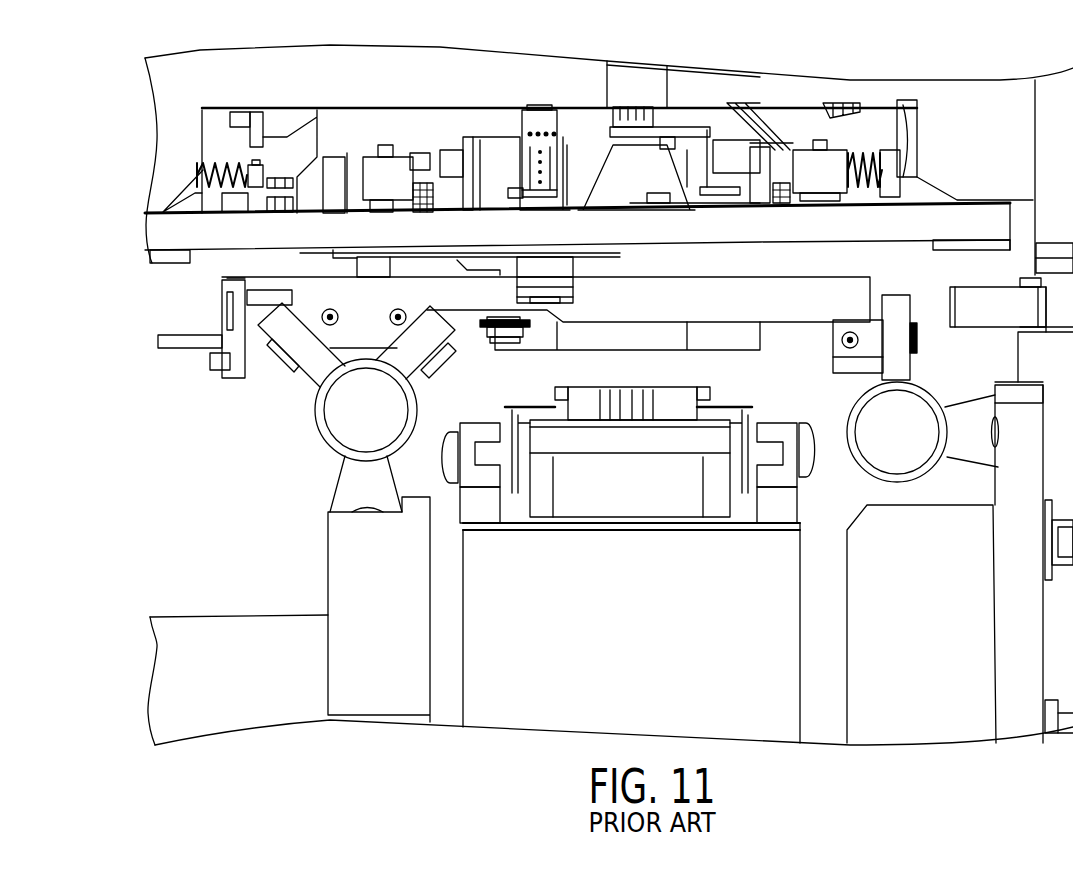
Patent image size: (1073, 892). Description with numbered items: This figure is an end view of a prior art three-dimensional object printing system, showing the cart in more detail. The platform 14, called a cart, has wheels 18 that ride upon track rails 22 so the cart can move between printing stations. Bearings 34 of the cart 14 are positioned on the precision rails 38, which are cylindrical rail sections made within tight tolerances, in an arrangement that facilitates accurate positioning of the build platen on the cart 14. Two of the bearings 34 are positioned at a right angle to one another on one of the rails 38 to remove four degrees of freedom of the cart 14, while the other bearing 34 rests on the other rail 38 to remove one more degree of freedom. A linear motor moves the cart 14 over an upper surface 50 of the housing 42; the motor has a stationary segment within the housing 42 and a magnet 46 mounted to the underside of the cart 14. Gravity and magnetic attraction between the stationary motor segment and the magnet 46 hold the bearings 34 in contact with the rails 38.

The platform 14 is at (868, 272).
The wheels 18 is at (480, 423).
The track rails 22 is at (456, 490).
The bearings 34 is at (306, 322).
The precision rails 38 is at (321, 437).
The housing 42 is at (570, 683).
The magnet 46 is at (613, 487).
The upper surface 50 is at (622, 533).